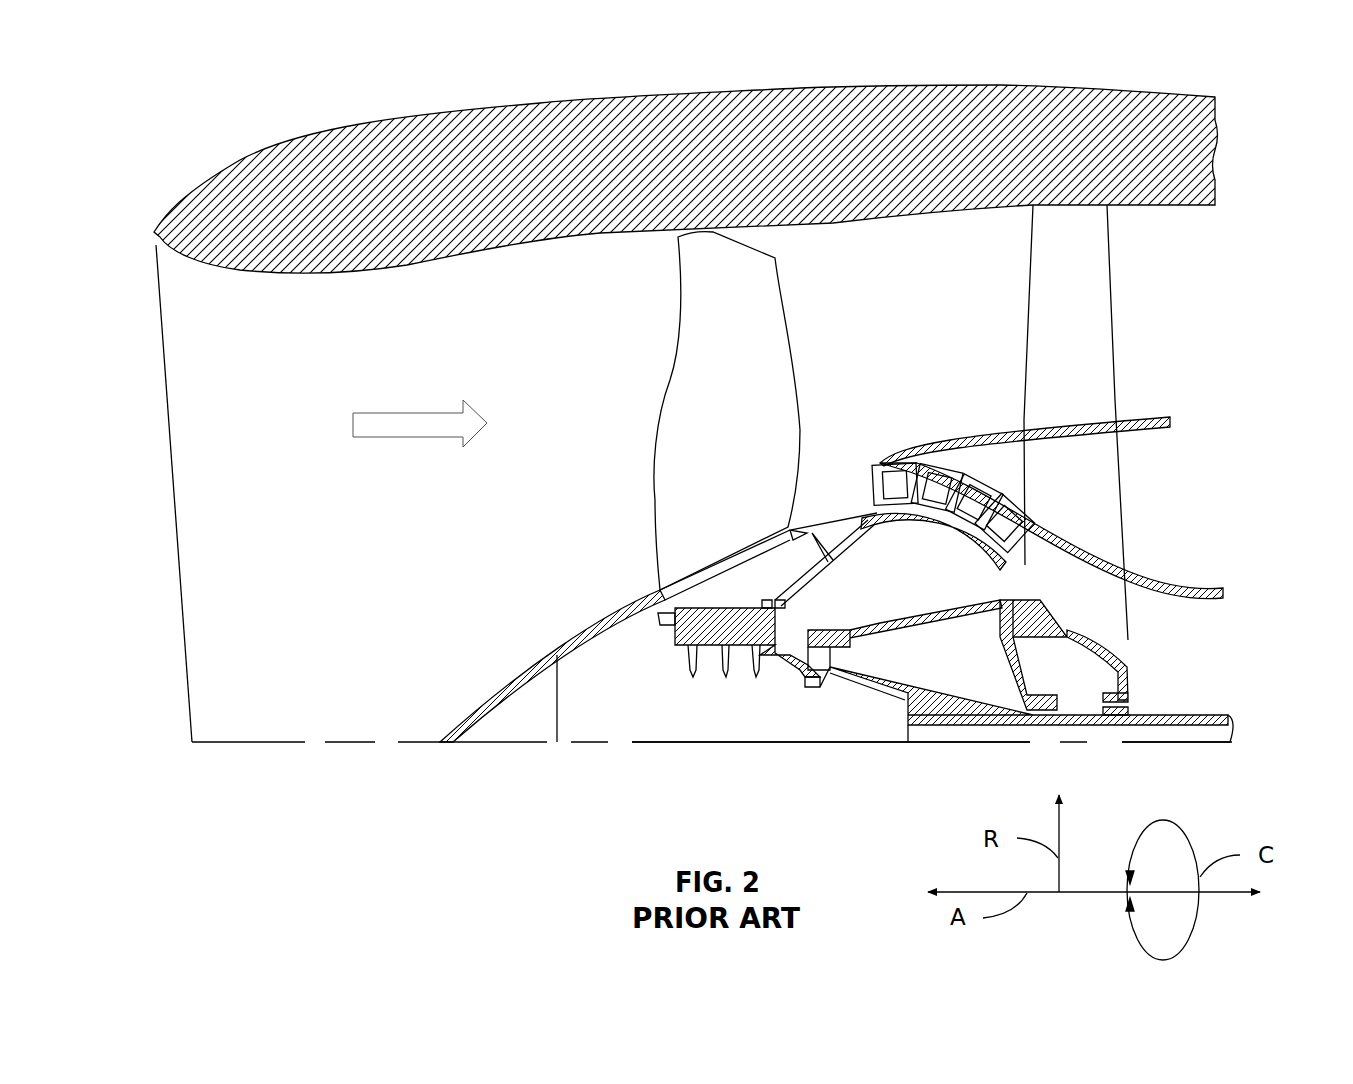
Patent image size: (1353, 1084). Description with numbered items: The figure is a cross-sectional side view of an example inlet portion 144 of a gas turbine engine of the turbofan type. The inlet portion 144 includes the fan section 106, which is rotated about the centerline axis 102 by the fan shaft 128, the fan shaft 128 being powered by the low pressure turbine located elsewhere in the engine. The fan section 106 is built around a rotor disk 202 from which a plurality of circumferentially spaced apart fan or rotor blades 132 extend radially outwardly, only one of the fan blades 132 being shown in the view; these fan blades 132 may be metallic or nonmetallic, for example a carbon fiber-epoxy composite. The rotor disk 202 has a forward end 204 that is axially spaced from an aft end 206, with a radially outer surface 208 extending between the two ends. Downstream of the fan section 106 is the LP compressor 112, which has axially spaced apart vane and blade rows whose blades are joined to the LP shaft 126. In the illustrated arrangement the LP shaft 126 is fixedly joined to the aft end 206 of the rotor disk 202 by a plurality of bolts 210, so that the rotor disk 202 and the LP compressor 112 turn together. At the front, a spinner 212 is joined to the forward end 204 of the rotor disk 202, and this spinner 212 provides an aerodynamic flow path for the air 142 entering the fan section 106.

The centerline axis 102 is at (650, 742).
The fan section 106 is at (632, 347).
The LP compressor 112 is at (943, 550).
The LP shaft 126 is at (852, 540).
The fan shaft 128 is at (900, 690).
The fan blades 132 is at (790, 327).
The air 142 is at (407, 437).
The inlet portion 144 is at (205, 93).
The rotor disk 202 is at (690, 677).
The forward end 204 is at (686, 642).
The aft end 206 is at (808, 628).
The radially outer surface 208 is at (756, 607).
The bolts 210 is at (790, 600).
The spinner 212 is at (580, 625).